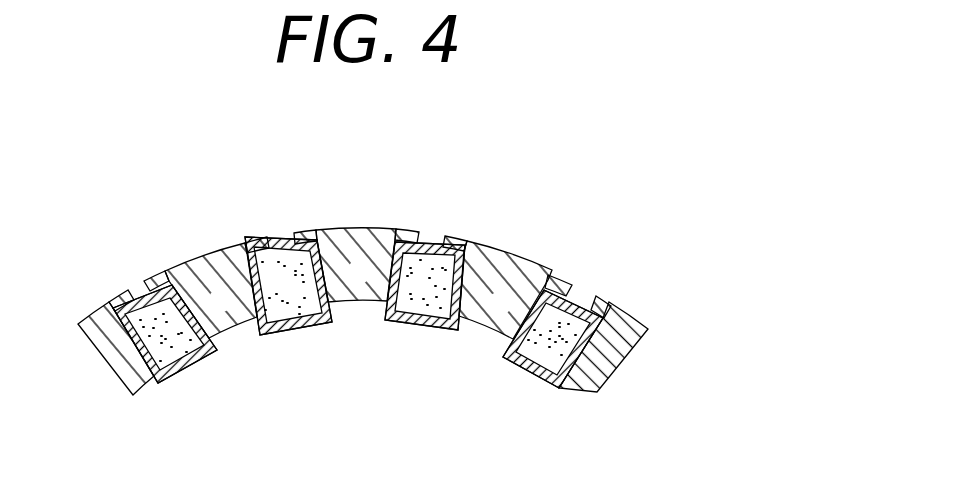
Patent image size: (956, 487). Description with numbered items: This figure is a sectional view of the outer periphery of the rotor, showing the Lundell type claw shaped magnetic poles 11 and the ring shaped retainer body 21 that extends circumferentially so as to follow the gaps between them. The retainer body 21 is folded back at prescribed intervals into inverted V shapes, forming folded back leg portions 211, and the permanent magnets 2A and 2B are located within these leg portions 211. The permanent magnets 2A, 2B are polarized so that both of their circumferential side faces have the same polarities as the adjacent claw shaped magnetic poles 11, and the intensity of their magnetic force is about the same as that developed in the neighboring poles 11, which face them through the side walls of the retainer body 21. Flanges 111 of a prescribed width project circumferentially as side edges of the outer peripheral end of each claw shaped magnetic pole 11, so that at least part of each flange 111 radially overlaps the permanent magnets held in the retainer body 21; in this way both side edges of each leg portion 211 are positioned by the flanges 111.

The Lundell type claw shaped magnetic pole 11 is at (363, 278).
The flange 111 is at (362, 220).
The folded back leg portion 211 is at (380, 274).
The retainer body 21 is at (383, 323).
The permanent magnet 2A is at (424, 342).
The permanent magnet 2B is at (289, 346).